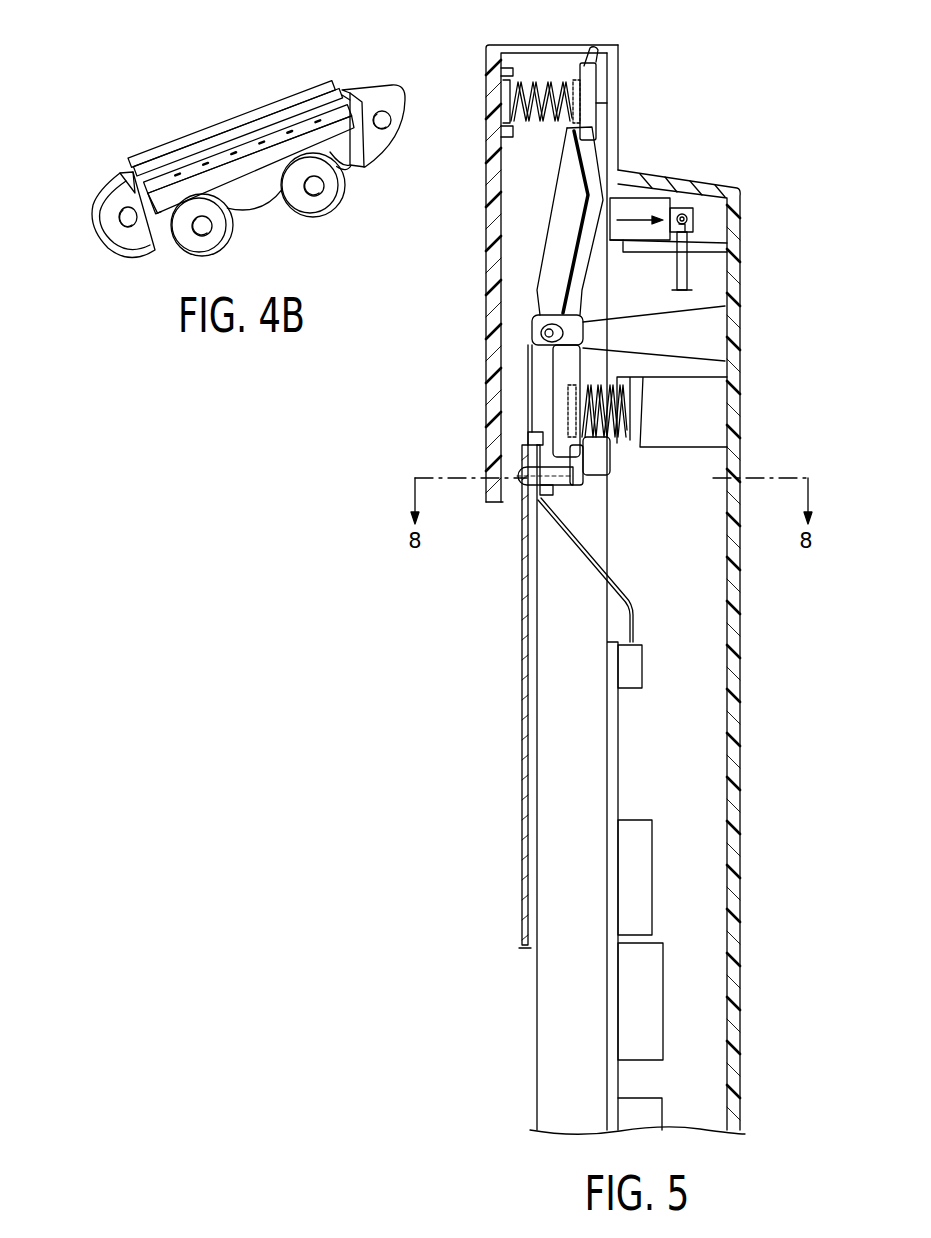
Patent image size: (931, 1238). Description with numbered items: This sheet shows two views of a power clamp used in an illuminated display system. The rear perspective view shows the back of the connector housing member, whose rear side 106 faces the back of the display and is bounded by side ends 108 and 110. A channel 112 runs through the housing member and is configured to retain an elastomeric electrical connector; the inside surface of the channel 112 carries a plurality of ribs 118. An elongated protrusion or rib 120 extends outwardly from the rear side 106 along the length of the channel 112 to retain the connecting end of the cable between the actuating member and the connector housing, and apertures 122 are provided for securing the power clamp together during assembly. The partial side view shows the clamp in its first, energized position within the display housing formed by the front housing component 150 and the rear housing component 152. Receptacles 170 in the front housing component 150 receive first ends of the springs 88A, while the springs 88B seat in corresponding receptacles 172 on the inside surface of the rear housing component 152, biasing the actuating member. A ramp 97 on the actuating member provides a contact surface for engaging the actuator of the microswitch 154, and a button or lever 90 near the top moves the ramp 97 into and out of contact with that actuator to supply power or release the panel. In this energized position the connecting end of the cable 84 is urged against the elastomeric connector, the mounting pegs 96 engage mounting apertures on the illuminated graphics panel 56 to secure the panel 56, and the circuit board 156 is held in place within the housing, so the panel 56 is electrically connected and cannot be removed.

In FIG. 5, the illuminated graphics panel 56 is at (522, 835).
In FIG. 5, the cable 84 is at (618, 607).
In FIG. 5, the spring 88A is at (547, 83).
In FIG. 5, the spring 88B is at (620, 438).
In FIG. 5, the button or lever 90 is at (595, 107).
In FIG. 5, the mounting pegs 96 is at (520, 492).
In FIG. 5, the ramp 97 is at (600, 252).
In FIG. 4B, the rear side 106 is at (240, 187).
In FIG. 4B, the side end 108 is at (400, 102).
In FIG. 4B, the side end 110 is at (95, 206).
In FIG. 4B, the channel 112 is at (310, 122).
In FIG. 4B, the ribs 118 is at (208, 168).
In FIG. 4B, the elongated protrusion or rib 120 is at (173, 190).
In FIG. 4B, the apertures 122 is at (200, 228).
In FIG. 5, the front housing component 150 is at (486, 292).
In FIG. 5, the rear housing component 152 is at (744, 258).
In FIG. 5, the microswitch 154 is at (640, 210).
In FIG. 5, the circuit board 156 is at (618, 745).
In FIG. 5, the receptacle 170 is at (484, 115).
In FIG. 5, the receptacle 172 is at (620, 392).